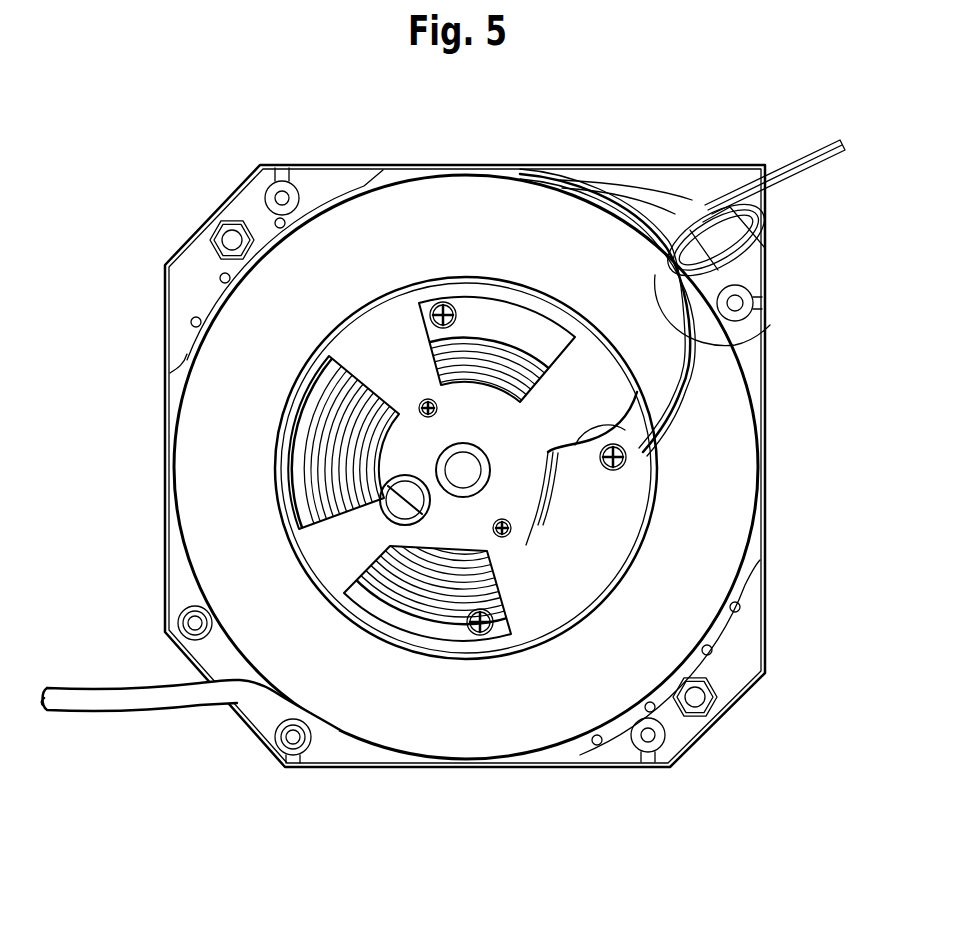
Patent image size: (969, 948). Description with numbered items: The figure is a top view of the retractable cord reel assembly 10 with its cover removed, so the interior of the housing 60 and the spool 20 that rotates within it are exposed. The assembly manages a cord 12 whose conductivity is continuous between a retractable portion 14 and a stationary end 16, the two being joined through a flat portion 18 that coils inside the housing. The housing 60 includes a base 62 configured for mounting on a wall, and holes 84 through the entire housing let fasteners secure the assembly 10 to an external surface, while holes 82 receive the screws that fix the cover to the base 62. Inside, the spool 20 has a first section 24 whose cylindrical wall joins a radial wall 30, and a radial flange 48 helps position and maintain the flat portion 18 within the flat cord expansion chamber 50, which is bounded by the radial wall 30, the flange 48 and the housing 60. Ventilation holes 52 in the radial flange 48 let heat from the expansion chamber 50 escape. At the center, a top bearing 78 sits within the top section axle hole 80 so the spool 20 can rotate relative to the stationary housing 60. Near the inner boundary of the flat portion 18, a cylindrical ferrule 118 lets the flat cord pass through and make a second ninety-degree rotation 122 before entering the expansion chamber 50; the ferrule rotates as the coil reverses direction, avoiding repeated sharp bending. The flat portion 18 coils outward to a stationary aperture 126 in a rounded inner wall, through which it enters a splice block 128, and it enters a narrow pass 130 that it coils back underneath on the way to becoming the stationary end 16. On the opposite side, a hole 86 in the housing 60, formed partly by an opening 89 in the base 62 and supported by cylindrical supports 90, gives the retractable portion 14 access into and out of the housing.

The retractable cord reel assembly 10 is at (242, 171).
The cord 12 is at (690, 340).
The retractable portion 14 is at (155, 680).
The stationary end 16 is at (830, 175).
The flat portion 18 is at (300, 428).
The spool 20 is at (466, 174).
The first section 24 is at (417, 170).
The radial wall 30 is at (508, 173).
The radial flange 48 is at (300, 370).
The flat cord expansion chamber 50 is at (508, 325).
The ventilation holes 52 is at (348, 355).
The housing 60 is at (169, 244).
The base 62 is at (166, 323).
The top bearing 78 is at (488, 470).
The top section axle hole 80 is at (548, 478).
The holes 82 is at (284, 196).
The holes 84 is at (230, 238).
The hole 86 is at (228, 708).
The opening 89 is at (220, 745).
The cylindrical supports 90 is at (310, 745).
The cylindrical ferrule 118 is at (395, 515).
The second ninety-degree rotation 122 is at (400, 500).
The stationary aperture 126 is at (745, 322).
The splice block 128 is at (672, 195).
The narrow pass 130 is at (718, 210).